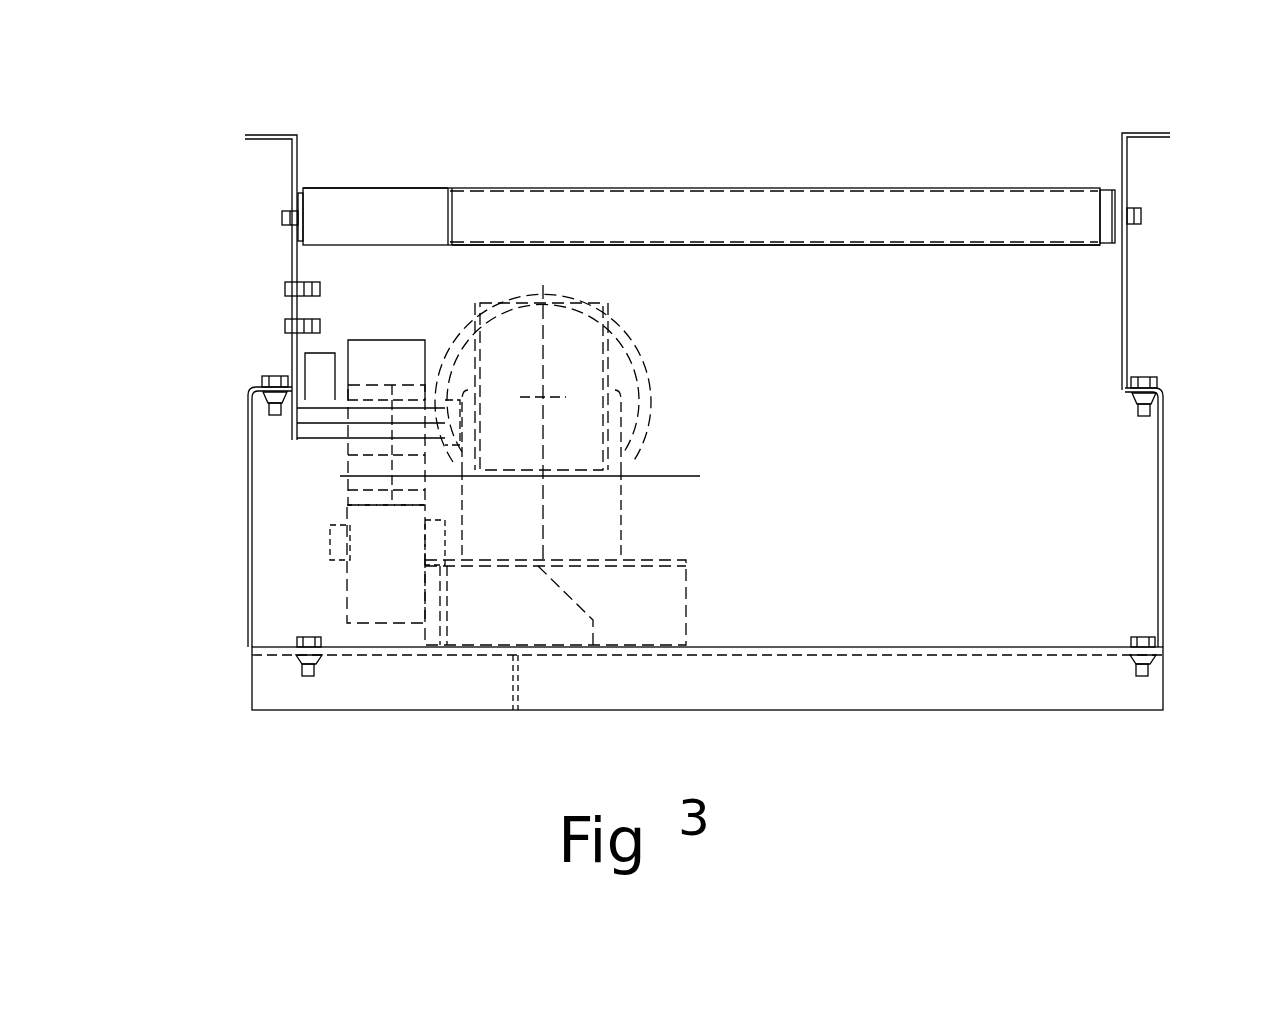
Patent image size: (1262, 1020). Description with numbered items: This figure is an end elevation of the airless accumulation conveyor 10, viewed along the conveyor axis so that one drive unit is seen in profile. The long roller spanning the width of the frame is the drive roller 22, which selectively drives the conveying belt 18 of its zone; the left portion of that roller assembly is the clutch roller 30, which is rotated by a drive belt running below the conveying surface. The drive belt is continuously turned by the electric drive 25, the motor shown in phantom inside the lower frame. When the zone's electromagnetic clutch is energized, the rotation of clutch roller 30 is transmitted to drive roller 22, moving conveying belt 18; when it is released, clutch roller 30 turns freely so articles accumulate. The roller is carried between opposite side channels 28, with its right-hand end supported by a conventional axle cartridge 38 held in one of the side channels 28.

The airless accumulation conveyor 10 is at (990, 190).
The conveying belt 18 is at (815, 188).
The drive roller 22 is at (765, 245).
The electric drive 25 is at (632, 470).
The side channel 28 is at (292, 238).
The clutch roller 30 is at (368, 190).
The axle cartridge 38 is at (1142, 216).